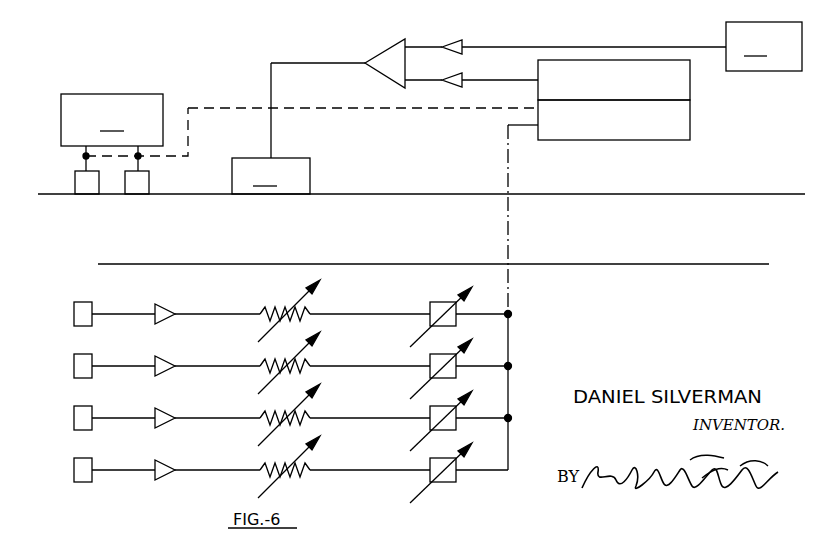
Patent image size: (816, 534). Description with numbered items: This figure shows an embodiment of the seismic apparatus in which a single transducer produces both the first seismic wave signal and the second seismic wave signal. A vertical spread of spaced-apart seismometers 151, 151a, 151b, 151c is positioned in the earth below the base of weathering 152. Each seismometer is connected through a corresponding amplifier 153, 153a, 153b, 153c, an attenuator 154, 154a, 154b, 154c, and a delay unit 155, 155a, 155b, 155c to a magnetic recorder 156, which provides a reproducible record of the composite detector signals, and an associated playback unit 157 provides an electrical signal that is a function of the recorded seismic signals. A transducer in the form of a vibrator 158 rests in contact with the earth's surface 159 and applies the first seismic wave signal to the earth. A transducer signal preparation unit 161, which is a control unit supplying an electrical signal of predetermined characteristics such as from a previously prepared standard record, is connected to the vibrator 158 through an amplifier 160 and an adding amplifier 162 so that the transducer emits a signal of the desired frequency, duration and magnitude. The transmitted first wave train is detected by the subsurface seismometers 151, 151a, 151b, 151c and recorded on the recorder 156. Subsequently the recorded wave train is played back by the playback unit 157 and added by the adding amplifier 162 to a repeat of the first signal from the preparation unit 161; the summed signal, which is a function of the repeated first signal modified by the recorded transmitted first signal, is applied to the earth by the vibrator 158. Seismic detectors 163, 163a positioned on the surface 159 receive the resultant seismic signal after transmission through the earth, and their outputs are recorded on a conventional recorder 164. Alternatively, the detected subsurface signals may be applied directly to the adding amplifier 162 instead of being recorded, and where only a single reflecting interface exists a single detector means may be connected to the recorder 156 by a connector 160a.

The seismometer 151 is at (74, 312).
The seismometer 151a is at (74, 364).
The seismometer 151b is at (74, 416).
The seismometer 151c is at (74, 468).
The base of weathering 152 is at (300, 262).
The amplifier 153 is at (172, 304).
The amplifier 153a is at (172, 356).
The amplifier 153b is at (172, 408).
The amplifier 153c is at (172, 460).
The attenuator 154 is at (266, 308).
The attenuator 154a is at (266, 360).
The attenuator 154b is at (266, 412).
The attenuator 154c is at (266, 464).
The delay unit 155 is at (428, 310).
The delay unit 155a is at (428, 362).
The delay unit 155b is at (428, 414).
The delay unit 155c is at (428, 466).
The magnetic recorder 156 is at (682, 115).
The playback unit 157 is at (682, 82).
The vibrator 158 is at (271, 128).
The earth's surface 159 is at (440, 193).
The amplifier 160 is at (458, 44).
The connector 160a is at (460, 110).
The transducer signal preparation unit 161 is at (764, 46).
The adding amplifier 162 is at (386, 70).
The seismic detector 163 is at (88, 191).
The seismic detector 163a is at (130, 192).
The recorder 164 is at (124, 132).